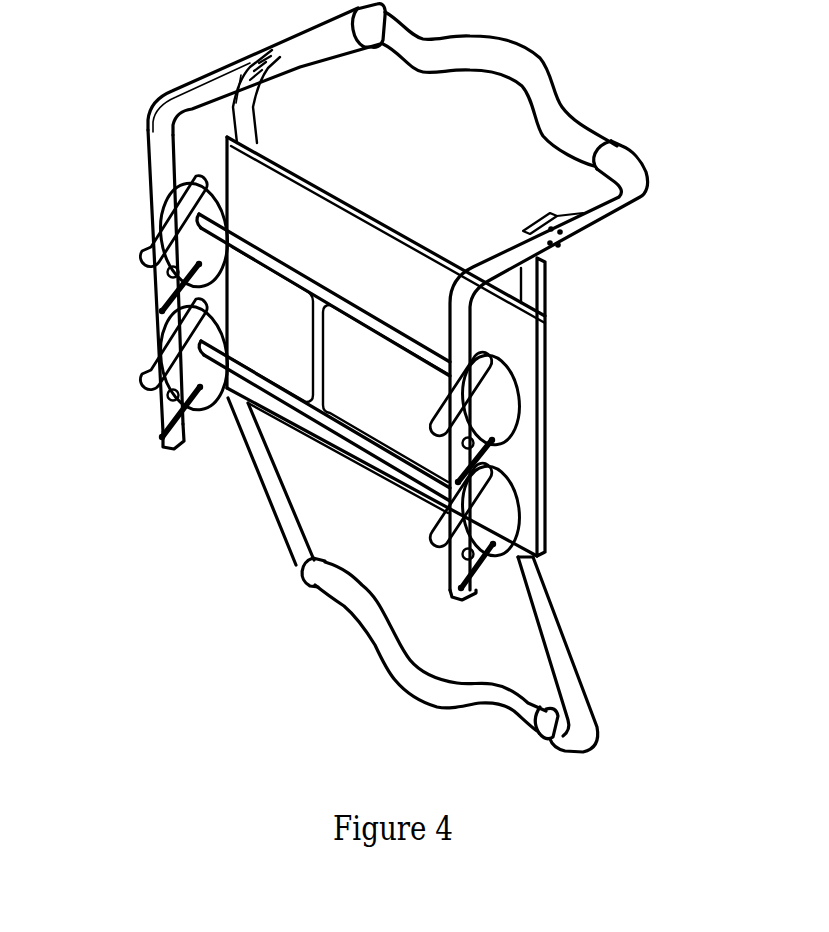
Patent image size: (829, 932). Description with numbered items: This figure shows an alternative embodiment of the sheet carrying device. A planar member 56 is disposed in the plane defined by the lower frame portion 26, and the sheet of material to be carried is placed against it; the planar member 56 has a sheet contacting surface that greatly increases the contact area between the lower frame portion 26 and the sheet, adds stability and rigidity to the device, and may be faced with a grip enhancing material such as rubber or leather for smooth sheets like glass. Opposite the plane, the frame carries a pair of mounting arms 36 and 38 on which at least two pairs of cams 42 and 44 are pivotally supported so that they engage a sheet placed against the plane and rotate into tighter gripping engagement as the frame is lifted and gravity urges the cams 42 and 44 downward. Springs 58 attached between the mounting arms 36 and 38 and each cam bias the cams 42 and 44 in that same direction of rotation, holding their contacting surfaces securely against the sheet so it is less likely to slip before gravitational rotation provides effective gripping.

The lower frame portion 26 is at (547, 582).
The mounting arm 36 is at (152, 329).
The mounting arm 38 is at (447, 500).
The cam 42 is at (140, 265).
The cam 44 is at (140, 394).
The planar member 56 is at (520, 323).
The spring 58 is at (158, 430).